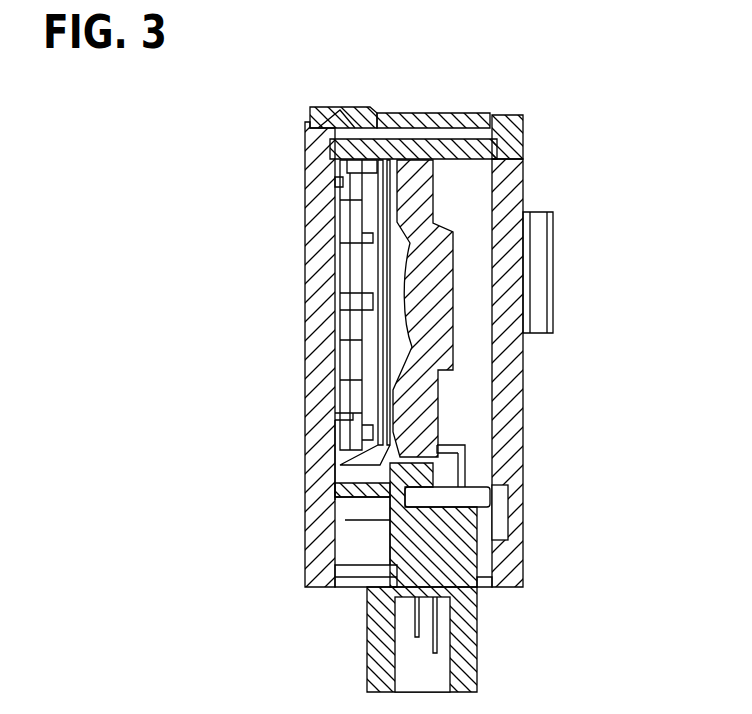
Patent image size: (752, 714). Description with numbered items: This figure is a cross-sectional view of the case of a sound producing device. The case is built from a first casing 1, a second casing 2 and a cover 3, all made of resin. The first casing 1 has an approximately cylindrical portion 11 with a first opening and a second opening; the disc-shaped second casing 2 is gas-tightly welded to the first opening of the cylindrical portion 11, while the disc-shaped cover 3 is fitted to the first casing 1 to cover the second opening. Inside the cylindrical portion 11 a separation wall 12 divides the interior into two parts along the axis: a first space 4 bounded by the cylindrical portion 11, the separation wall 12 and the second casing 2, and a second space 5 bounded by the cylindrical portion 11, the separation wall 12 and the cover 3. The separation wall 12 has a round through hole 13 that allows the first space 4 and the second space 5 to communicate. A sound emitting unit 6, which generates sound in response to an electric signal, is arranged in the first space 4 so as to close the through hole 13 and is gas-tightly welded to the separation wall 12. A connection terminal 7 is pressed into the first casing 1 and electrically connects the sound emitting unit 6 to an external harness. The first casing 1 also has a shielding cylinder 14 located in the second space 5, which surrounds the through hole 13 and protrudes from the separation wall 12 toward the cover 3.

The first casing 1 is at (412, 110).
The second casing 2 is at (510, 417).
The cover 3 is at (307, 203).
The first space 4 is at (465, 210).
The second space 5 is at (340, 270).
The sound emitting unit 6 is at (440, 328).
The connection terminal 7 is at (440, 643).
The cylindrical portion 11 is at (440, 152).
The separation wall 12 is at (322, 464).
The through hole 13 is at (385, 355).
The shielding cylinder 14 is at (360, 120).